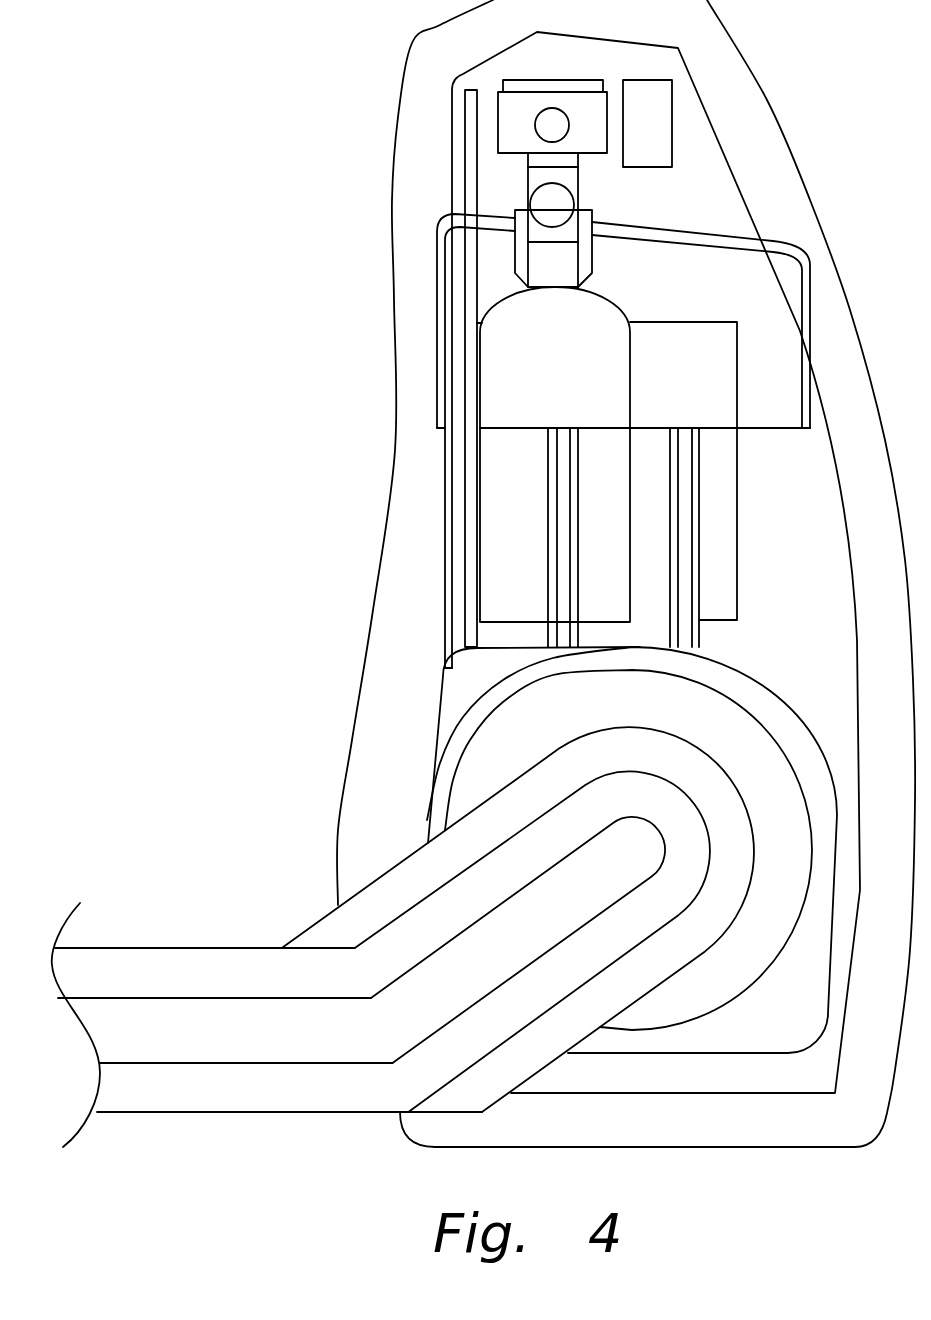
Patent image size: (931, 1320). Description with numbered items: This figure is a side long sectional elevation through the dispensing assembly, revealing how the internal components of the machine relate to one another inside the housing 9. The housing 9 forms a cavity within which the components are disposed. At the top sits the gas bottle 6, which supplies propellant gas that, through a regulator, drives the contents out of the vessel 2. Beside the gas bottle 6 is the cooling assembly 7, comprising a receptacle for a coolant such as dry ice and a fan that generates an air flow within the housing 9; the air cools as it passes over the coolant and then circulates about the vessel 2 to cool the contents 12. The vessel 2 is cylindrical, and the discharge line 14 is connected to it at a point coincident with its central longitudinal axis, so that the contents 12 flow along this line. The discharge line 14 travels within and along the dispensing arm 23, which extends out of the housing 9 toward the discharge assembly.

The vessel 2 is at (456, 784).
The gas bottle 6 is at (533, 375).
The cooling assembly 7 is at (707, 535).
The housing 9 is at (743, 143).
The contents 12 is at (711, 981).
The discharge line 14 is at (509, 939).
The dispensing arm 23 is at (174, 993).